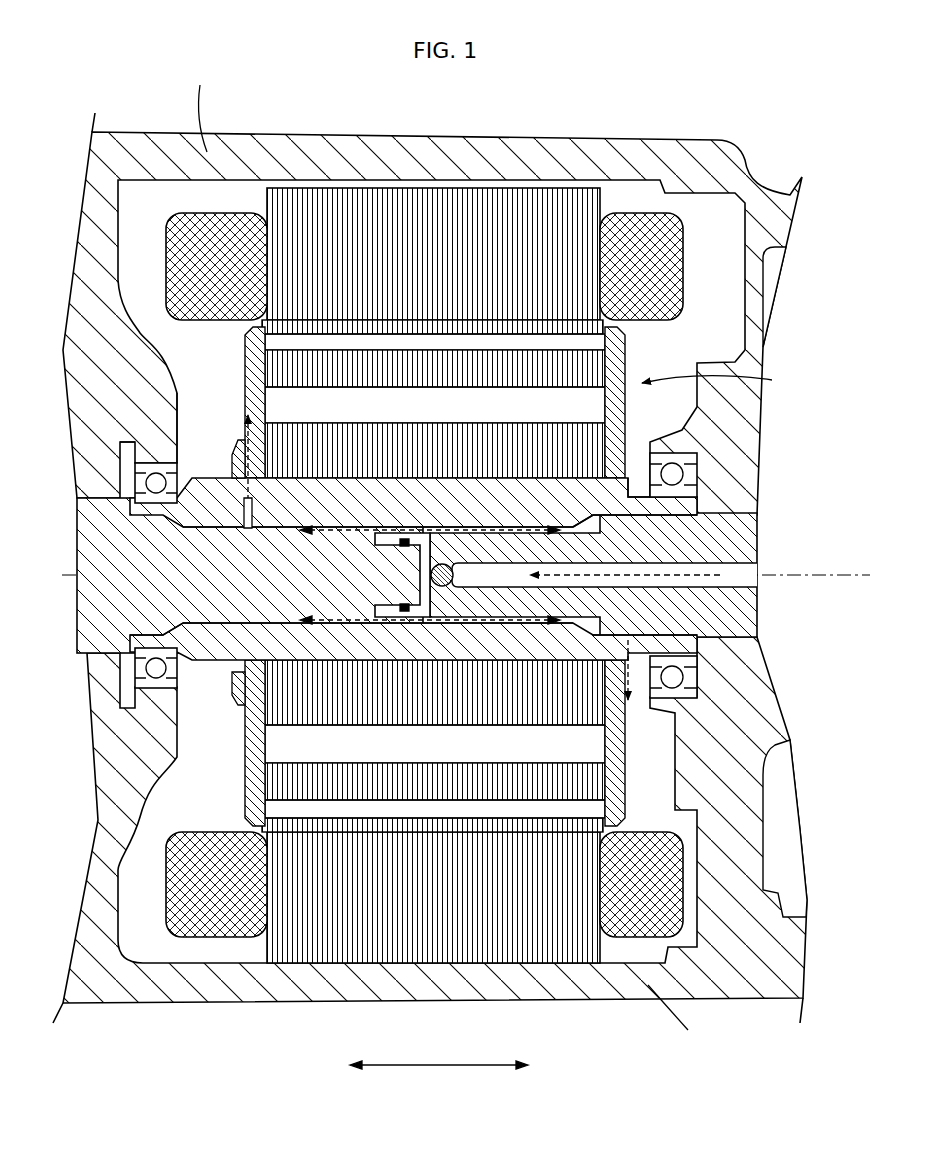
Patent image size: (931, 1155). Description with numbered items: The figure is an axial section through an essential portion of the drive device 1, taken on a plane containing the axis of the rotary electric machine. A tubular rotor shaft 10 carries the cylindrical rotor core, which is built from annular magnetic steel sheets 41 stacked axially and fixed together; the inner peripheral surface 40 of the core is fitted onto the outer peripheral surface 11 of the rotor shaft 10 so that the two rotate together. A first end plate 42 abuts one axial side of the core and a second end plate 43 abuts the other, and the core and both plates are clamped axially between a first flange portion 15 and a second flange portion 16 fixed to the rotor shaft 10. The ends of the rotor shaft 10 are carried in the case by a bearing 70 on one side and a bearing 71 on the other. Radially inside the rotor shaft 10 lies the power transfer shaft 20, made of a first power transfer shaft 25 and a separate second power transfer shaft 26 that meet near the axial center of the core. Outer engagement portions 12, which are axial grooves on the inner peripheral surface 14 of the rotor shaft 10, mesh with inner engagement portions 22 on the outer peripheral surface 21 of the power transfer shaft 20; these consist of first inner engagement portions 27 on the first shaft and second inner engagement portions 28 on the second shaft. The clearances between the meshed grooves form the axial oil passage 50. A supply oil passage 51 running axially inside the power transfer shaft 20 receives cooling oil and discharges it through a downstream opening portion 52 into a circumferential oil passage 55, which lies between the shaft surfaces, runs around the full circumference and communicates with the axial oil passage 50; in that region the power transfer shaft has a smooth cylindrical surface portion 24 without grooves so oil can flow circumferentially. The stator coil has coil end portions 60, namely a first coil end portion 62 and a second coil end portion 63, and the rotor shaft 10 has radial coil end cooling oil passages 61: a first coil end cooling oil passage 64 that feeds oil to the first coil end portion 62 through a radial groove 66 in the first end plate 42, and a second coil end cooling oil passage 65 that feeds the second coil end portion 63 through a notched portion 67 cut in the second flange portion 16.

The drive device 1 is at (712, 100).
The rotor shaft 10 is at (200, 445).
The outer peripheral surface 11 is at (618, 362).
The outer engagement portions 12 is at (405, 525).
The inner peripheral surface 14 is at (200, 610).
The first flange portion 15 is at (232, 465).
The second flange portion 16 is at (628, 460).
The power transfer shaft 20 is at (422, 554).
The outer peripheral surface 21 is at (232, 668).
The inner engagement portions 22 is at (413, 522).
The cylindrical surface portion 24 is at (440, 650).
The first power transfer shaft 25 is at (100, 548).
The second power transfer shaft 26 is at (755, 550).
The first inner engagement portions 27 is at (285, 535).
The second inner engagement portions 28 is at (585, 530).
The inner peripheral surface 40 is at (540, 640).
The magnetic steel sheets 41 is at (487, 185).
The first end plate 42 is at (245, 760).
The second end plate 43 is at (620, 790).
The axial oil passage 50 is at (520, 530).
The supply oil passage 51 is at (752, 578).
The downstream opening portion 52 is at (470, 630).
The circumferential oil passage 55 is at (460, 530).
The coil end portions 60 is at (427, 559).
The coil end cooling oil passages 61 is at (521, 536).
The first coil end portion 62 is at (172, 242).
The second coil end portion 63 is at (680, 285).
The first coil end cooling oil passage 64 is at (262, 505).
The second coil end cooling oil passage 65 is at (700, 648).
The radial groove 66 is at (243, 430).
The notched portion 67 is at (700, 740).
The bearing 70 is at (140, 497).
The bearing 71 is at (690, 460).